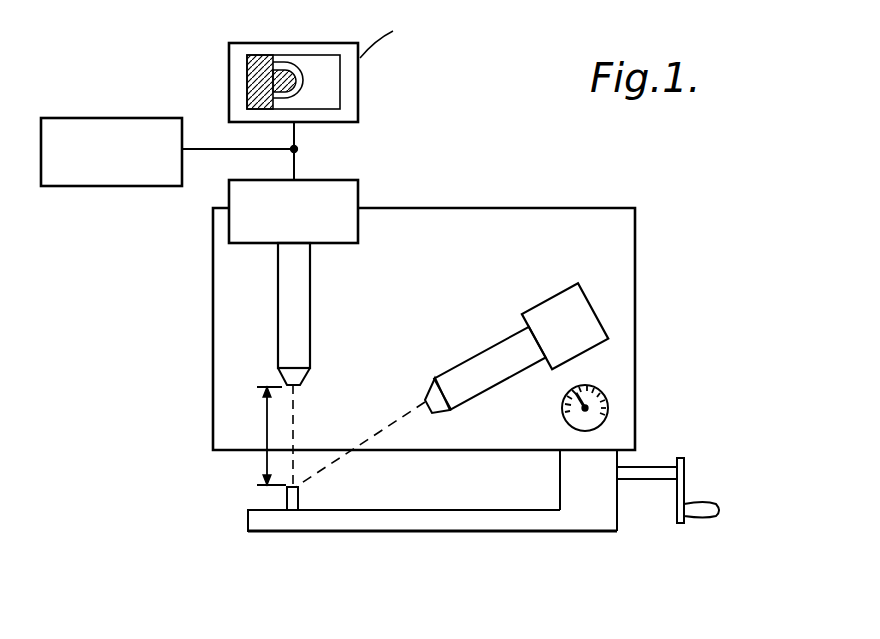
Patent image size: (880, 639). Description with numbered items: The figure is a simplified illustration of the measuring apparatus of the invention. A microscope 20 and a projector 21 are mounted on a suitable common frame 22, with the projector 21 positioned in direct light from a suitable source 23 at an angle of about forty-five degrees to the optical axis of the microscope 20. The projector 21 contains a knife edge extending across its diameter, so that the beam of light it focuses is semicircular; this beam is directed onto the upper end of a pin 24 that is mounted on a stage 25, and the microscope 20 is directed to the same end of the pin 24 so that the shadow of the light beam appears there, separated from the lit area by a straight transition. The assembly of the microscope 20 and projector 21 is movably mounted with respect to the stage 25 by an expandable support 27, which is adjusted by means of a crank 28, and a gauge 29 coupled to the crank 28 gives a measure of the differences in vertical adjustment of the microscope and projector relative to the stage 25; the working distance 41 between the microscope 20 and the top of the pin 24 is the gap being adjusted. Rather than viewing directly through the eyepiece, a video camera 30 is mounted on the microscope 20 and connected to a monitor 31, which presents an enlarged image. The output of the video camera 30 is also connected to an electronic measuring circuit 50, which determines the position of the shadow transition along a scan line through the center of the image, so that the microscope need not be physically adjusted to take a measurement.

The microscope 20 is at (303, 302).
The projector 21 is at (460, 368).
The common frame 22 is at (213, 372).
The source 23 is at (559, 293).
The pin 24 is at (298, 498).
The stage 25 is at (420, 520).
The expandable support 27 is at (603, 493).
The crank 28 is at (657, 466).
The gauge 29 is at (604, 396).
The video camera 30 is at (358, 181).
The monitor 31 is at (352, 102).
The working distance 41 is at (265, 420).
The electronic measuring circuit 50 is at (96, 118).